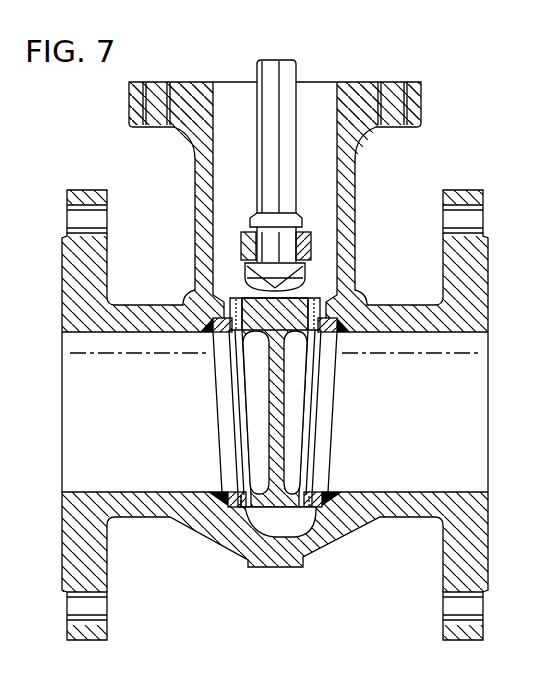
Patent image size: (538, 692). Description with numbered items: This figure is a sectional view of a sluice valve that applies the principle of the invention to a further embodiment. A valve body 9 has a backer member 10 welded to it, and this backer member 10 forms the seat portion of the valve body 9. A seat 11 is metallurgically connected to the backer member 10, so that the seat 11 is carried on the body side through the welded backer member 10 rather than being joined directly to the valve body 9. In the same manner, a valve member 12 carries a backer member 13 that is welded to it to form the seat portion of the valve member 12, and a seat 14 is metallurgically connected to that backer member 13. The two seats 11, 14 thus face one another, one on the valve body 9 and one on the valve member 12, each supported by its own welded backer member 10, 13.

The valve body 9 is at (213, 539).
The backer member 10 is at (232, 508).
The seat 11 is at (256, 512).
The valve member 12 is at (311, 484).
The backer member 13 is at (250, 467).
The seat 14 is at (255, 515).